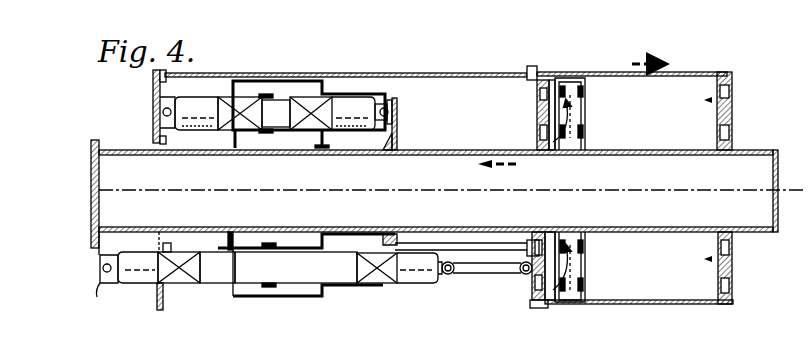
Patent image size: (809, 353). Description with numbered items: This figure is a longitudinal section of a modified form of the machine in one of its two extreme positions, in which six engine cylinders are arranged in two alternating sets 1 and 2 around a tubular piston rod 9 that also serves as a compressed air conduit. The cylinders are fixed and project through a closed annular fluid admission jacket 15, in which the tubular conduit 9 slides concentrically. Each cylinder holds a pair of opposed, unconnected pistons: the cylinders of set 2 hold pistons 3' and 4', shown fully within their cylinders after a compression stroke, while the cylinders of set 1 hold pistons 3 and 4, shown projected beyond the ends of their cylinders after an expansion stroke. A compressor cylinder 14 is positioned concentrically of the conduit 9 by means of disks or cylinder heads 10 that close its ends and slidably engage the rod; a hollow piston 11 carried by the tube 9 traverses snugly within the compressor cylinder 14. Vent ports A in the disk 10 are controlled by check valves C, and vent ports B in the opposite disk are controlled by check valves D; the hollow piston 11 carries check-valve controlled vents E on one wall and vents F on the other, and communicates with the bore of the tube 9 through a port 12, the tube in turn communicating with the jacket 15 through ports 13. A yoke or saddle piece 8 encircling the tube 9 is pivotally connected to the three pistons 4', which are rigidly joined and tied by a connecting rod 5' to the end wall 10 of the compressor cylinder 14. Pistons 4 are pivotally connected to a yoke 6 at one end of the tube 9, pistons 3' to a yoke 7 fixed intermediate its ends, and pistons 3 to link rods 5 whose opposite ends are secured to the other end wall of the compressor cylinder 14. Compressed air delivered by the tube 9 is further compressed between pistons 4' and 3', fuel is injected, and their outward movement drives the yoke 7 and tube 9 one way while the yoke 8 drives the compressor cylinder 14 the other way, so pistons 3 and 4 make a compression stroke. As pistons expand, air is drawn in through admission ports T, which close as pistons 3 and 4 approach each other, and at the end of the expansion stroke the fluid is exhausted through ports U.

The first set of engine cylinders 1 is at (330, 290).
The second set of engine cylinders 2 is at (380, 98).
The piston 3 is at (397, 283).
The piston 3' is at (332, 86).
The piston 4 is at (159, 271).
The piston 4' is at (218, 86).
The link rods 5 is at (485, 283).
The connecting rod 5' is at (351, 58).
The yoke 6 is at (99, 284).
The yoke 7 is at (398, 128).
The yoke or saddle piece 8 is at (153, 105).
The tubular piston rod 9 is at (440, 243).
The disk or cylinder head 10 is at (537, 116).
The hollow piston 11 is at (585, 122).
The port 12 is at (575, 152).
The ports 13 is at (247, 153).
The compressor cylinder 14 is at (609, 72).
The fluid admission jacket 15 is at (330, 236).
The vent ports A is at (538, 92).
The vent ports B is at (732, 93).
The check valves C is at (548, 82).
The check valves D is at (718, 91).
The check-valve controlled vents E is at (567, 82).
The check-valve controlled vents F is at (585, 94).
The admission ports T is at (272, 92).
The exhaust ports U is at (196, 94).